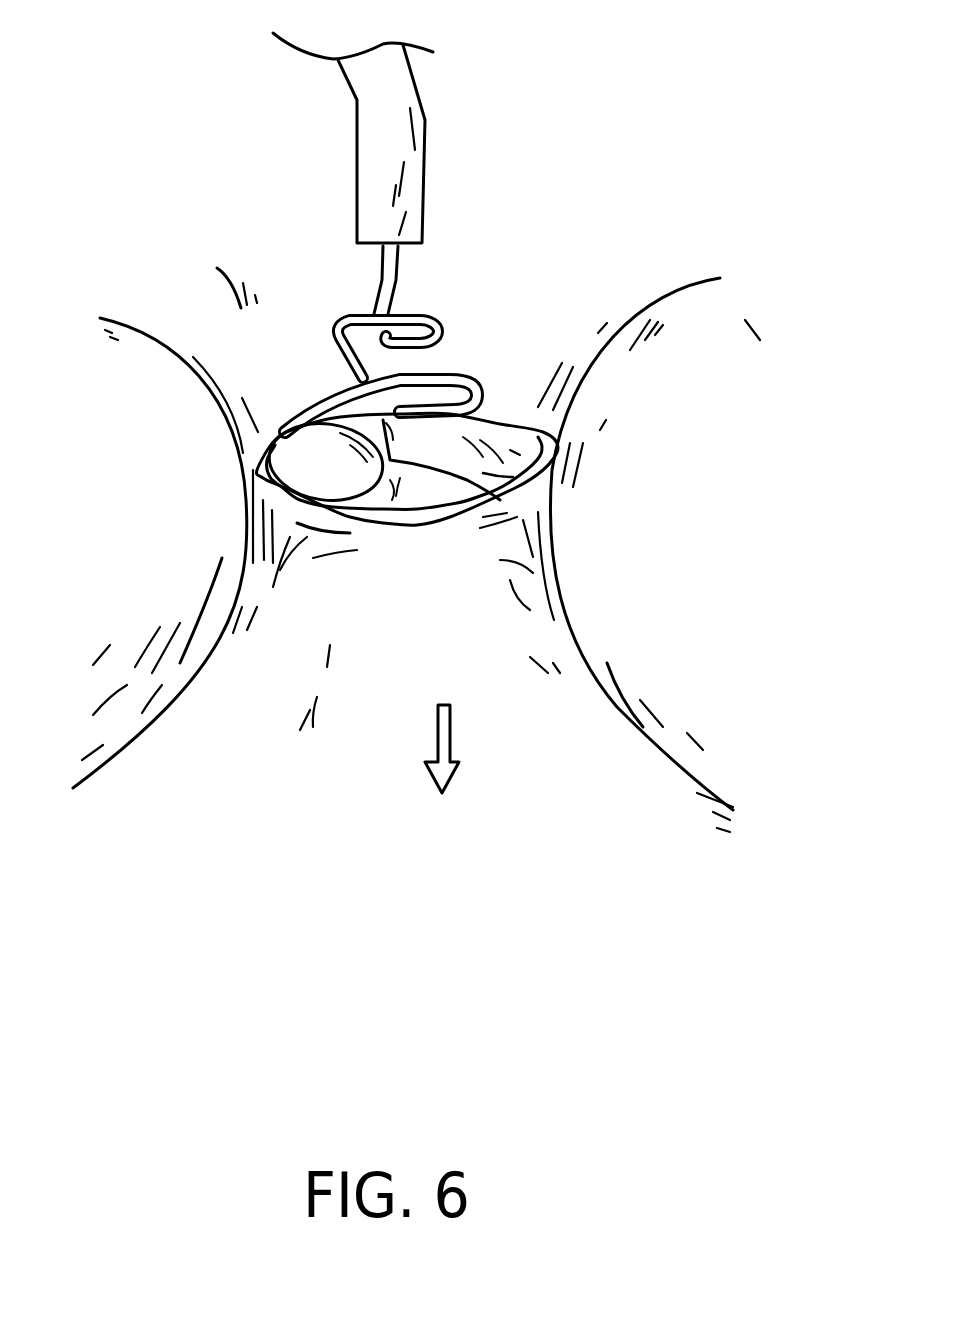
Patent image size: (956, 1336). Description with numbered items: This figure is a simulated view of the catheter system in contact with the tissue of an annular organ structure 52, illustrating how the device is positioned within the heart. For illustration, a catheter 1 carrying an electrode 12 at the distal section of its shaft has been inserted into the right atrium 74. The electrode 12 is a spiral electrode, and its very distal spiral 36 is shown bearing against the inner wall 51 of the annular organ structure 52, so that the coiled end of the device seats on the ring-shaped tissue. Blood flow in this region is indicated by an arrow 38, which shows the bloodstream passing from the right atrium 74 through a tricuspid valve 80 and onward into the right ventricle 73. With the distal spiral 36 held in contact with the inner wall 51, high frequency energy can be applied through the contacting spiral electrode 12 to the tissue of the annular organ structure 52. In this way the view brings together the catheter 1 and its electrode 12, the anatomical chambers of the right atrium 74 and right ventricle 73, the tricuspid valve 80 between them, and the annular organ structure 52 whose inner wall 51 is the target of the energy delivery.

The catheter 1 is at (432, 125).
The electrode 12 is at (447, 362).
The very distal spiral 36 is at (283, 513).
The arrow 38 is at (462, 780).
The inner wall 51 is at (247, 472).
The annular organ structure 52 is at (538, 498).
The right ventricle 73 is at (249, 806).
The right atrium 74 is at (658, 165).
The tricuspid valve 80 is at (490, 438).